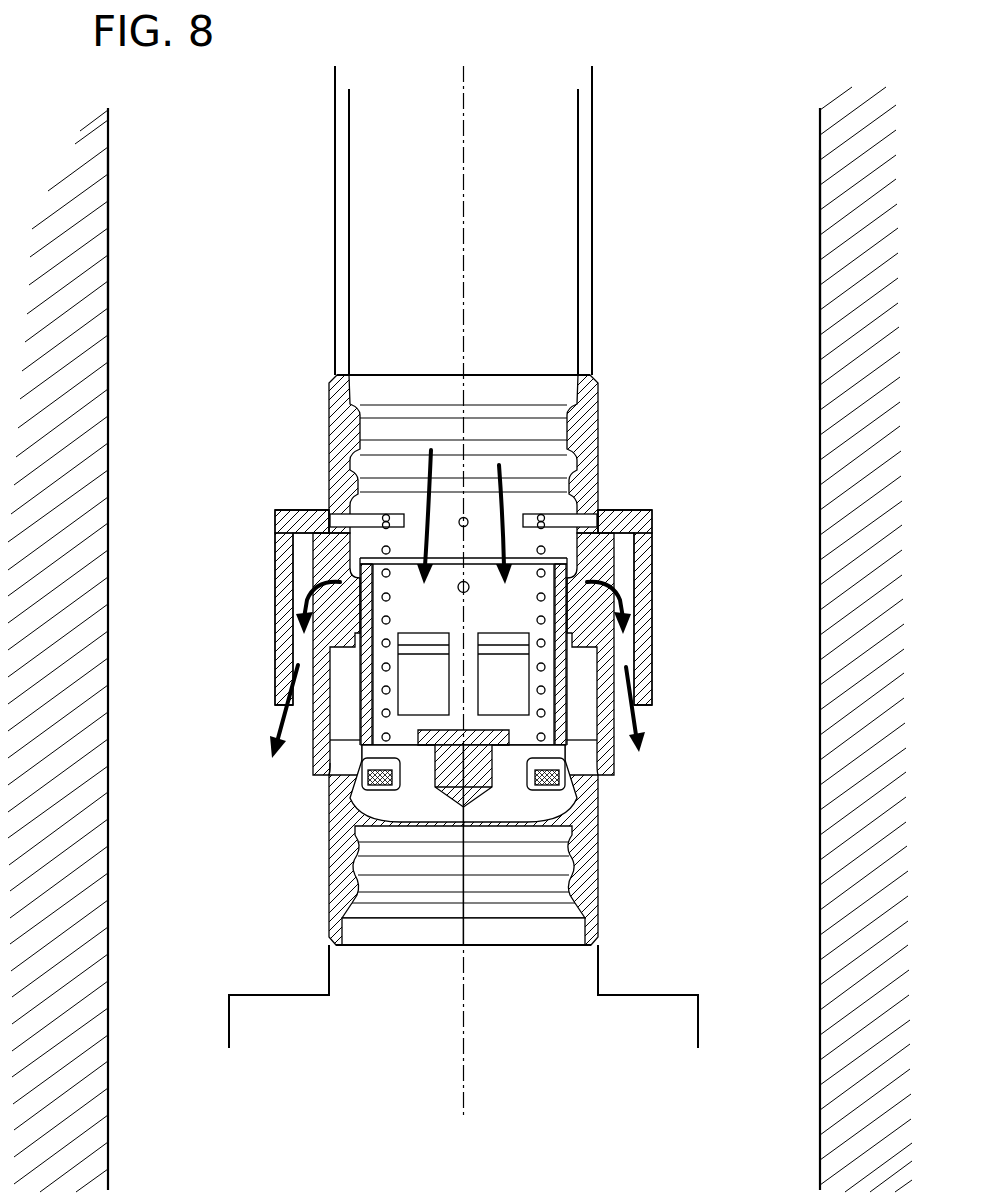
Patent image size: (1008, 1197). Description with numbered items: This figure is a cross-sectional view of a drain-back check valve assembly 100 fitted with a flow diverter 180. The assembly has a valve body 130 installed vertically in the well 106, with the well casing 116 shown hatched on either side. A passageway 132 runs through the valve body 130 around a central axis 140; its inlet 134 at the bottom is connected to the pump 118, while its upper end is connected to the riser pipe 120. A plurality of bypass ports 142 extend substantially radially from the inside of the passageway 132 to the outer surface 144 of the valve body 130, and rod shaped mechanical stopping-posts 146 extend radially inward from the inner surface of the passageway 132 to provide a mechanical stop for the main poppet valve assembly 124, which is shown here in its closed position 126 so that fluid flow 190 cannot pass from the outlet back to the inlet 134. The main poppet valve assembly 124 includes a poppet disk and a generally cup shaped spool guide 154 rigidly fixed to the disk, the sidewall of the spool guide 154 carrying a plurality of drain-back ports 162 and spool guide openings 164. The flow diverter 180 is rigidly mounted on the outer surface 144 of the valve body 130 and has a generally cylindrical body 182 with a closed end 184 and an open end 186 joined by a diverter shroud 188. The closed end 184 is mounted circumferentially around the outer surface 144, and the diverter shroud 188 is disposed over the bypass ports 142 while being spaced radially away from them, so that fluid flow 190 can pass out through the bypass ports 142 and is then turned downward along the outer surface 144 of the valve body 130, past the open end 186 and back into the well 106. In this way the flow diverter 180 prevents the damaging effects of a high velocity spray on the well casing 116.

The drain-back check valve assembly 100 is at (610, 389).
The well 106 is at (122, 170).
The well casing 116 is at (109, 256).
The pump 118 is at (600, 963).
The riser pipe 120 is at (594, 312).
The main poppet valve assembly 124 is at (558, 777).
The closed position 126 is at (580, 752).
The valve body 130 is at (599, 880).
The passageway 132 is at (483, 965).
The inlet 134 is at (418, 945).
The central axis 140 is at (463, 190).
The bypass ports 142 is at (350, 578).
The outer surface 144 is at (333, 466).
The stopping-posts 146 is at (459, 520).
The spool guide 154 is at (322, 768).
The drain-back ports 162 is at (357, 578).
The spool guide openings 164 is at (562, 668).
The flow diverter 180 is at (670, 525).
The cylindrical body 182 is at (634, 517).
The closed end 184 is at (620, 507).
The open end 186 is at (648, 708).
The diverter shroud 188 is at (653, 560).
The fluid flow 190 is at (446, 458).